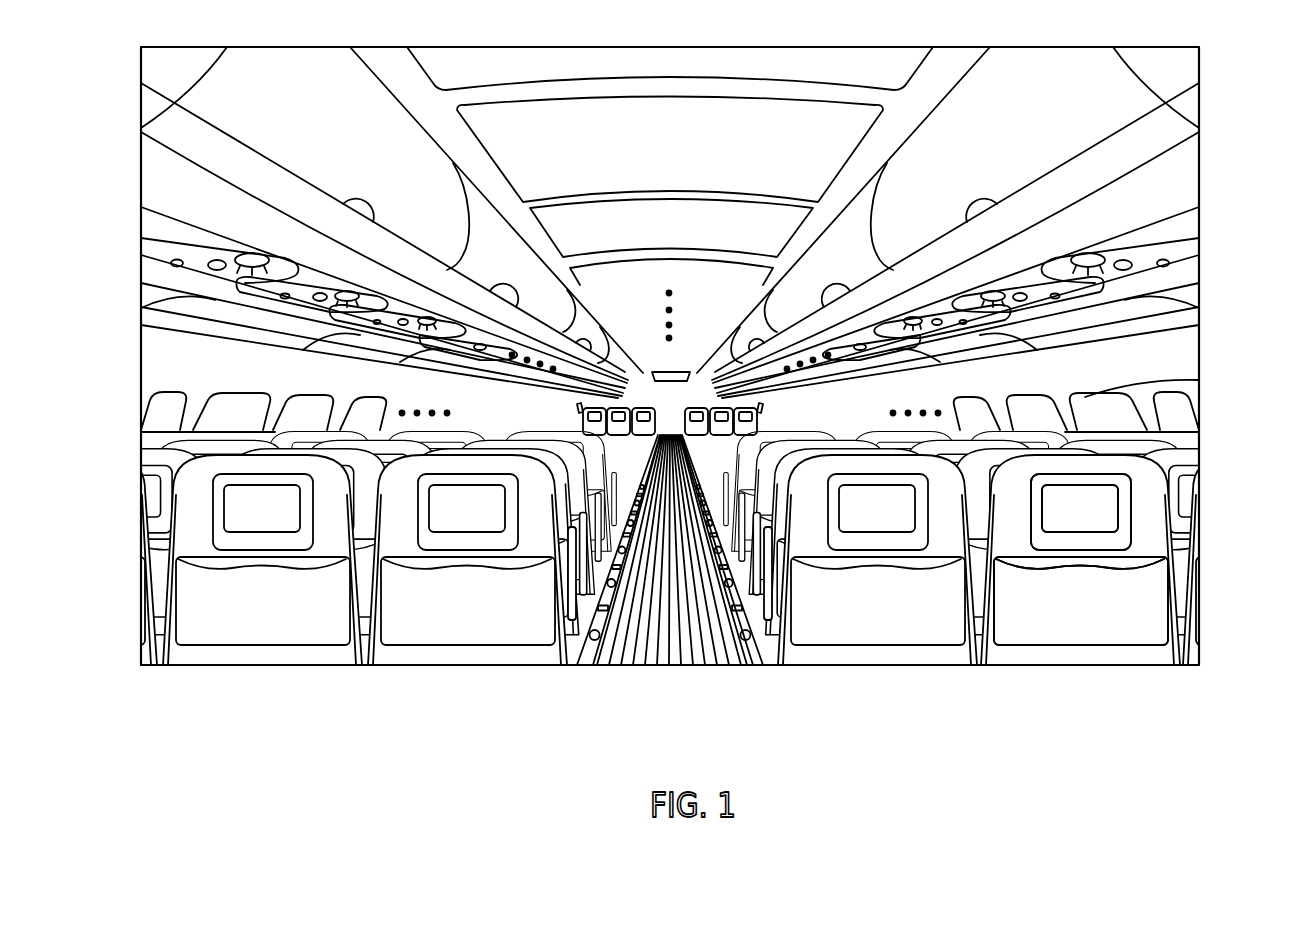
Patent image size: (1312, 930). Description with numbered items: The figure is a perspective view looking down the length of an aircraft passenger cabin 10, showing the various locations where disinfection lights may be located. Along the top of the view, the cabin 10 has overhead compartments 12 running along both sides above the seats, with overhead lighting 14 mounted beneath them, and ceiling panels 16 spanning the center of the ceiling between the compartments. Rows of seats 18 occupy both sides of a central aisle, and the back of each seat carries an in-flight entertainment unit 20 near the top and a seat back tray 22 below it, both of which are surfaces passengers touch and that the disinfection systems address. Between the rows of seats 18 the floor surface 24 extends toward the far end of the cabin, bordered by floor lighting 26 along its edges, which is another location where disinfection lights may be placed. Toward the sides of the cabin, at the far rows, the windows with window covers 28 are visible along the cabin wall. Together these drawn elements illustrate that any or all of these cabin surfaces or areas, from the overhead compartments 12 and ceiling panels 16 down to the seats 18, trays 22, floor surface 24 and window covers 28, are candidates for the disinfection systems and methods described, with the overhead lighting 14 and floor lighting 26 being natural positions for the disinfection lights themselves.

The aircraft passenger cabin 10 is at (1232, 217).
The overhead compartments 12 is at (1024, 122).
The overhead lighting 14 is at (1103, 289).
The ceiling panels 16 is at (679, 149).
The seats 18 is at (1087, 453).
The in-flight entertainment (IFE) units 20 is at (1092, 510).
The seat back trays 22 is at (1093, 603).
The floor surface 24 is at (684, 626).
The floor lighting 26 is at (590, 648).
The windows with window covers 28 is at (1115, 413).